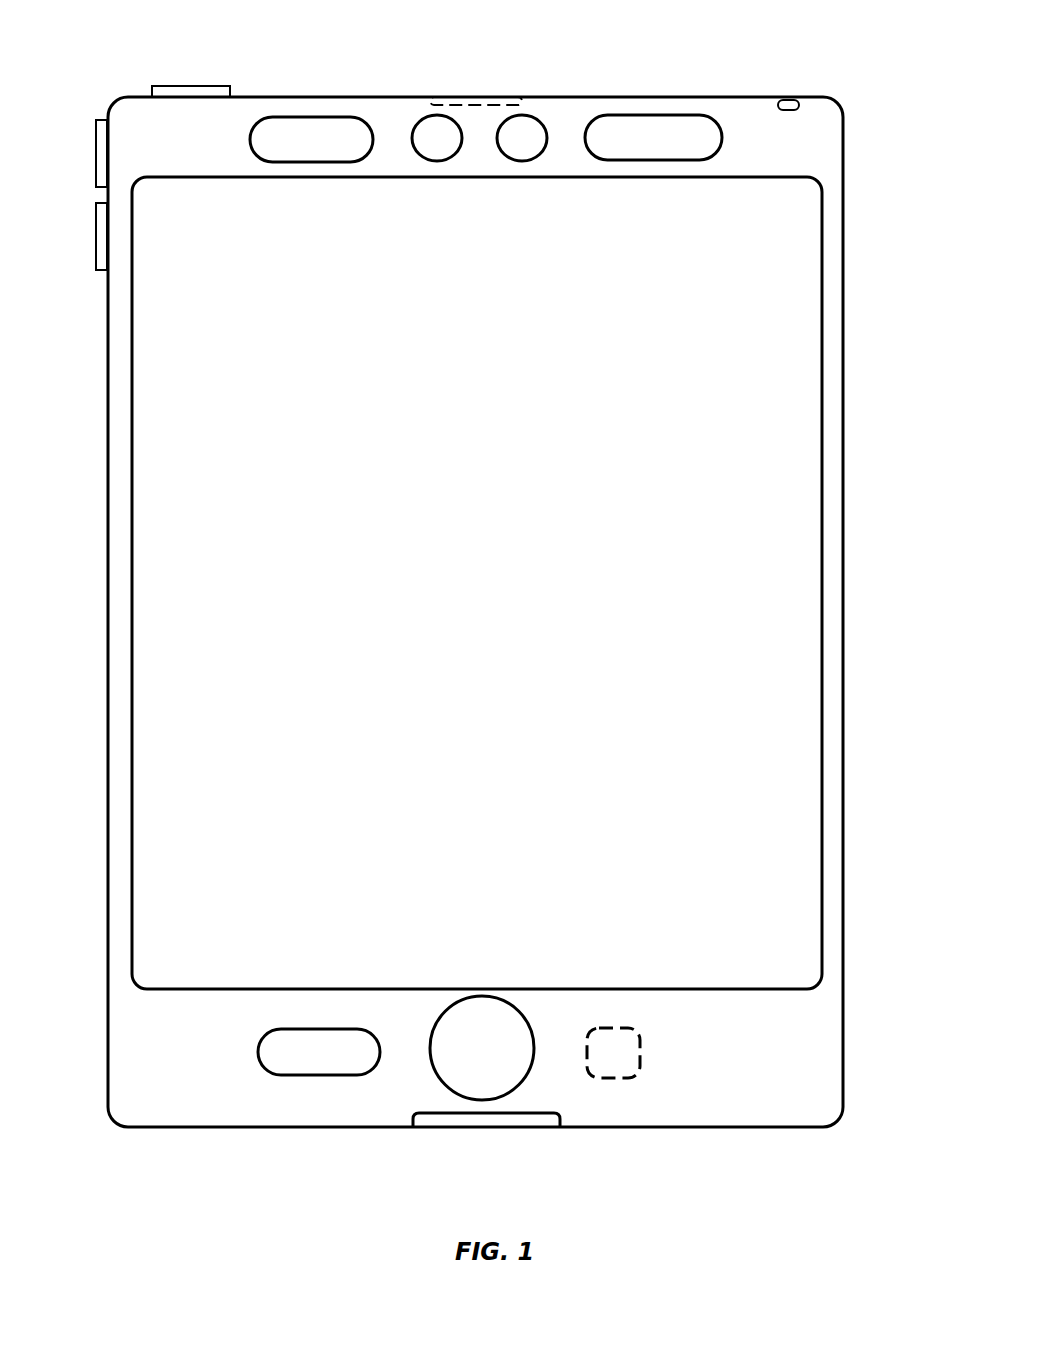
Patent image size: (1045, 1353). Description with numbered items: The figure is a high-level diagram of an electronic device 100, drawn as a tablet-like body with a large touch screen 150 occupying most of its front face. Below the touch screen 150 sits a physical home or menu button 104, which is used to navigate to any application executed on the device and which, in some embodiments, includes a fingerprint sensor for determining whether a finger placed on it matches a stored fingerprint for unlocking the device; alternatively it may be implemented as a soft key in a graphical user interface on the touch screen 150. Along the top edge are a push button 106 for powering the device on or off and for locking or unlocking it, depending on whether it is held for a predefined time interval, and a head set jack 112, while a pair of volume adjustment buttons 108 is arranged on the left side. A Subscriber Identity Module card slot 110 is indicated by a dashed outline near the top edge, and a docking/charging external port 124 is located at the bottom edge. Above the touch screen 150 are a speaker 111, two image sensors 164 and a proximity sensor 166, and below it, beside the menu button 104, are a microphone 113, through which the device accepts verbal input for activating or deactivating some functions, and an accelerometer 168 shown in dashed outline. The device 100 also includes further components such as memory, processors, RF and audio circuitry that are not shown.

The electronic device 100 is at (881, 94).
The menu button 104 is at (482, 1048).
The push button 106 is at (197, 86).
The volume adjustment buttons 108 is at (97, 152).
The Subscriber Identity Module (SIM) card slot 110 is at (455, 97).
The speaker 111 is at (298, 147).
The head set jack 112 is at (788, 100).
The microphone 113 is at (304, 1061).
The docking/charging external port 124 is at (528, 1128).
The touch screen 150 is at (822, 477).
The image sensors 164 is at (423, 147).
The proximity sensors 166 is at (638, 147).
The accelerometers 168 is at (599, 1061).